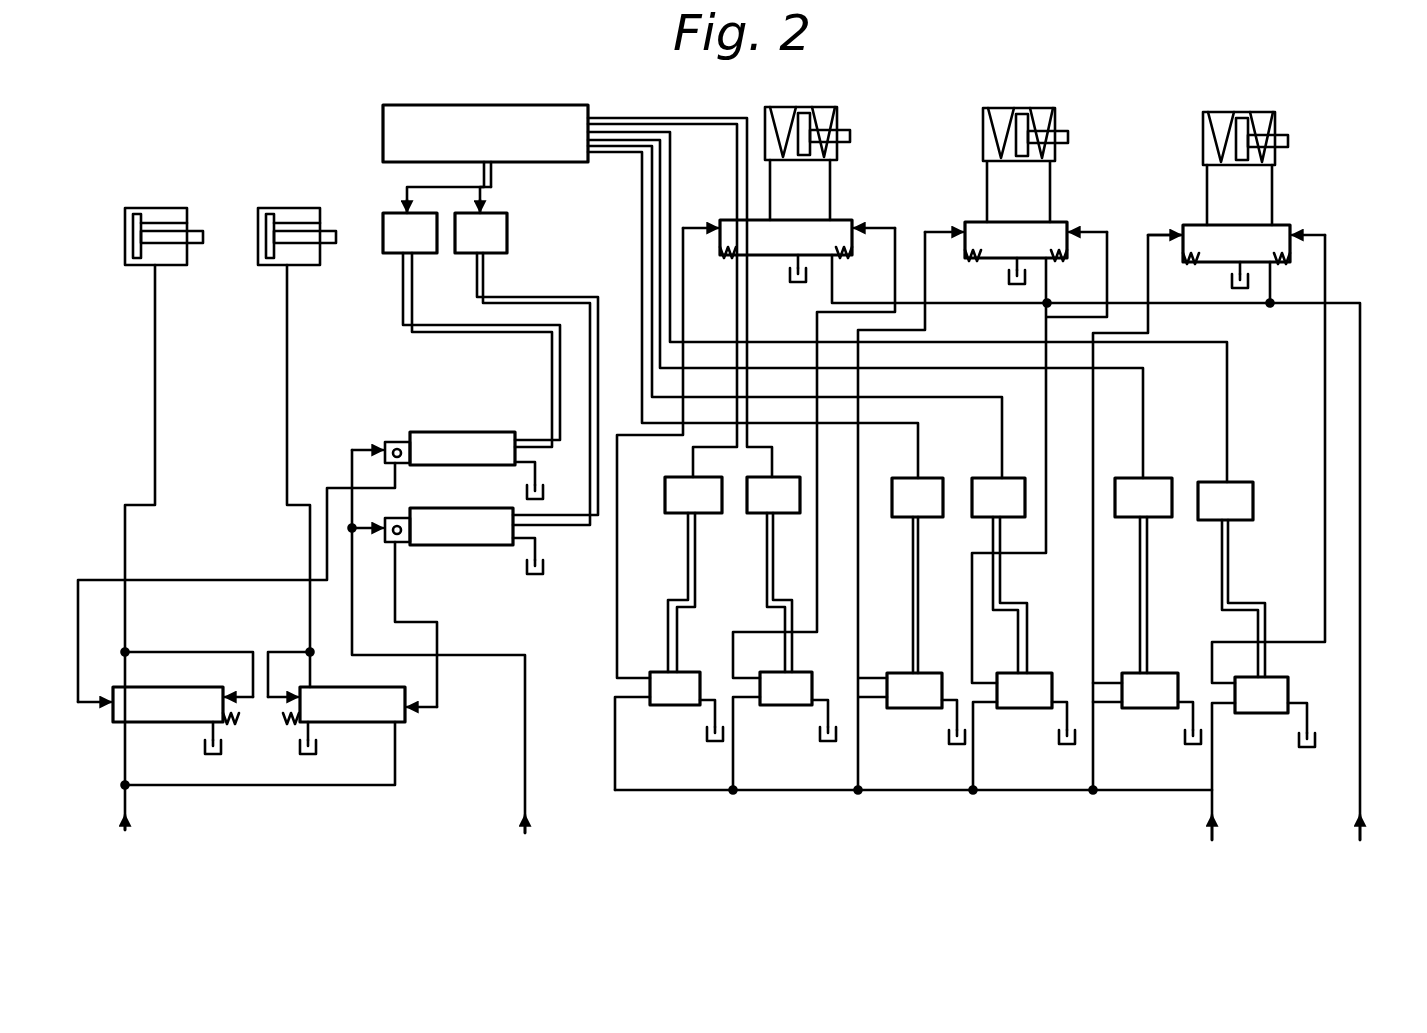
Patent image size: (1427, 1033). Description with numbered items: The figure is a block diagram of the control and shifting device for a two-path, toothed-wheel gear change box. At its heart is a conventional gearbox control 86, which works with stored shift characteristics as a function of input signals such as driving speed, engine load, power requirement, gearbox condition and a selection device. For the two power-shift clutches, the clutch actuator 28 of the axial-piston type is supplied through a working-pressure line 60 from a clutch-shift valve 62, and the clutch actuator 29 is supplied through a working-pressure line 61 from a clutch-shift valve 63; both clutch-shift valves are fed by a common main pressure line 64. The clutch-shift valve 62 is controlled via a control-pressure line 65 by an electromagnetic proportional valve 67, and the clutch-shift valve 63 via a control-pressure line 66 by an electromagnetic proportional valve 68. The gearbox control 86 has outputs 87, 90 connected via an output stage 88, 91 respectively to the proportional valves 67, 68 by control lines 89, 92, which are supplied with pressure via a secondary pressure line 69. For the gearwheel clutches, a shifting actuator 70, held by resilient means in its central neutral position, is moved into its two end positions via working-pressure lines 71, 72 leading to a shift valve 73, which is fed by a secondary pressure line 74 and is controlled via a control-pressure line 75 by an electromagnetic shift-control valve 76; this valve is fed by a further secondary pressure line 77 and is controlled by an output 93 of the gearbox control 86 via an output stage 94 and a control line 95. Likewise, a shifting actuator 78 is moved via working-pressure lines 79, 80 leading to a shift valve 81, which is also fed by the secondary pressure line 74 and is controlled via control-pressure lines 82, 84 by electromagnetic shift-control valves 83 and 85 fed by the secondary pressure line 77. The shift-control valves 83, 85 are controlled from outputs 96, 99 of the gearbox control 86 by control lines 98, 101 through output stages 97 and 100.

The clutch actuator 28 is at (122, 205).
The clutch actuator 29 is at (255, 205).
The working-pressure line 60 is at (160, 440).
The working-pressure line 61 is at (290, 410).
The clutch-shift valve 62 is at (110, 724).
The clutch-shift valve 63 is at (410, 735).
The main pressure line 64 is at (286, 797).
The control-pressure line 65 is at (78, 615).
The control-pressure line 66 is at (442, 640).
The electromagnetic proportional valve 67 is at (405, 425).
The electromagnetic proportional valve 68 is at (485, 510).
The secondary pressure line 69 is at (530, 742).
The shifting actuator 70 is at (1008, 106).
The working-pressure line 71 is at (1053, 195).
The working-pressure line 72 is at (985, 205).
The shift valve 73 is at (1008, 218).
The secondary pressure line 74 is at (1366, 485).
The control-pressure line 75 is at (1050, 487).
The electromagnetic shift-control valve 76 is at (1023, 733).
The secondary pressure line 77 is at (1022, 805).
The shifting actuator 78 is at (1240, 110).
The working-pressure line 79 is at (1275, 197).
The working-pressure line 80 is at (1203, 205).
The shift valve 81 is at (1226, 222).
The control-pressure line 82 is at (1332, 283).
The electromagnetic shift-control valve 83 is at (1263, 758).
The control-pressure line 84 is at (1090, 578).
The electromagnetic shift-control valve 85 is at (1147, 708).
The gearbox control 86 is at (462, 100).
The output 87 is at (440, 178).
The output stage 88 is at (410, 233).
The control line 89 is at (433, 322).
The output 90 is at (502, 178).
The output stage 91 is at (481, 233).
The control line 92 is at (590, 470).
The output 93 is at (607, 152).
The output stage 94 is at (998, 497).
The control line 95 is at (987, 532).
The output 96 is at (618, 126).
The output stage 97 is at (1225, 501).
The control line 98 is at (1243, 560).
The output 99 is at (633, 132).
The output stage 100 is at (1143, 497).
The control line 101 is at (1157, 597).